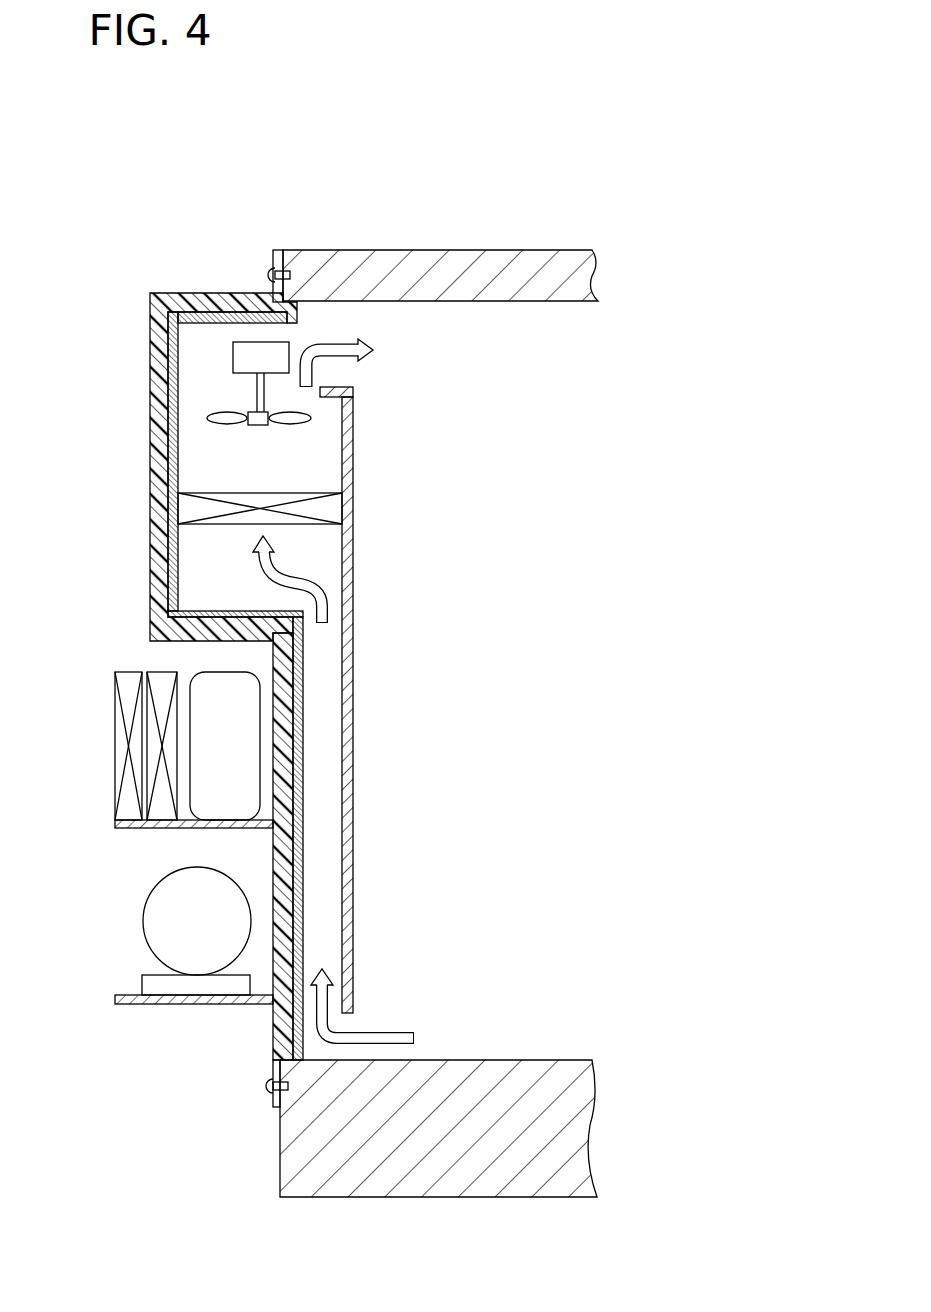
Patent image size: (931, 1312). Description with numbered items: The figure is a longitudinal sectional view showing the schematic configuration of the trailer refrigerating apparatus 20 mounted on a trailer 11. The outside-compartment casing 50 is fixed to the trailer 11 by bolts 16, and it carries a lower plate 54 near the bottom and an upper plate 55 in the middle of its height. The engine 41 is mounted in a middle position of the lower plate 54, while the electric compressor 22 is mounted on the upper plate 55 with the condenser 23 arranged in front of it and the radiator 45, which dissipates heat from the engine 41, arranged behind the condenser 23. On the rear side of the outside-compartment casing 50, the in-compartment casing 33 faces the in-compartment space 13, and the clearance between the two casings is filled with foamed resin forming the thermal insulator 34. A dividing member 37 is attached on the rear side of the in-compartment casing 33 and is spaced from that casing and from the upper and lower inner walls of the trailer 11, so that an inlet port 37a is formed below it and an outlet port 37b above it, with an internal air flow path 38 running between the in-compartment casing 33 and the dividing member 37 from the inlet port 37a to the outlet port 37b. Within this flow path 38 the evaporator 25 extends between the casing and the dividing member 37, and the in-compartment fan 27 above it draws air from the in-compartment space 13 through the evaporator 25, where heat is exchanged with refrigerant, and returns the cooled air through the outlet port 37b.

The trailer 11 is at (423, 244).
The in-compartment space 13 is at (492, 737).
The bolt 16 is at (268, 277).
The trailer refrigerating apparatus 20 is at (92, 185).
The electric compressor 22 is at (222, 745).
The condenser 23 is at (128, 685).
The evaporator 25 is at (285, 498).
The in-compartment fan 27 is at (247, 368).
The in-compartment casing 33 is at (222, 604).
The thermal insulator 34 is at (162, 372).
The dividing member 37 is at (350, 635).
The inlet port 37a is at (347, 1025).
The outlet port 37b is at (313, 388).
The internal air flow path 38 is at (313, 574).
The engine 41 is at (153, 920).
The radiator 45 is at (160, 672).
The outside-compartment casing 50 is at (140, 558).
The lower plate 54 is at (127, 1004).
The upper plate 55 is at (125, 826).